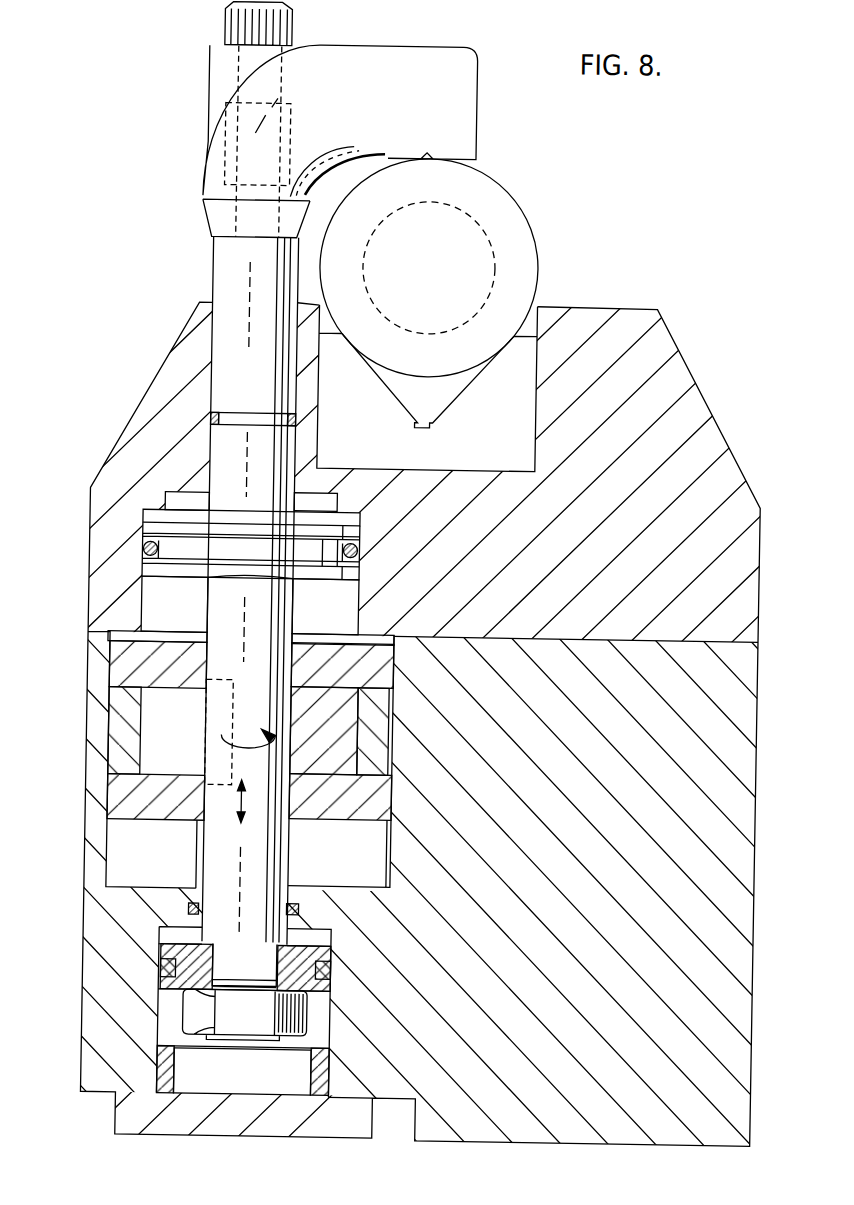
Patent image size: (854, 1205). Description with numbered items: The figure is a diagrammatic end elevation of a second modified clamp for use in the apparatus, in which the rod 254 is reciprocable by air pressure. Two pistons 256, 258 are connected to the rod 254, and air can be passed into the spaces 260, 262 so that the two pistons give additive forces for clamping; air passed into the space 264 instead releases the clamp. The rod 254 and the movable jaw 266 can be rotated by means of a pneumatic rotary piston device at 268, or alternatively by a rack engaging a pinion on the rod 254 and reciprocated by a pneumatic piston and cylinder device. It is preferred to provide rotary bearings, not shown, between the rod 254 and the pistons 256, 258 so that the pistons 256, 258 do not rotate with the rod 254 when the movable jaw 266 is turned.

The rod 254 is at (226, 285).
The piston 256 is at (157, 535).
The piston 258 is at (304, 958).
The space 260 is at (316, 509).
The space 262 is at (180, 935).
The space 264 is at (286, 1075).
The movable jaw 266 is at (440, 118).
The pneumatic rotary piston device 268 is at (393, 760).